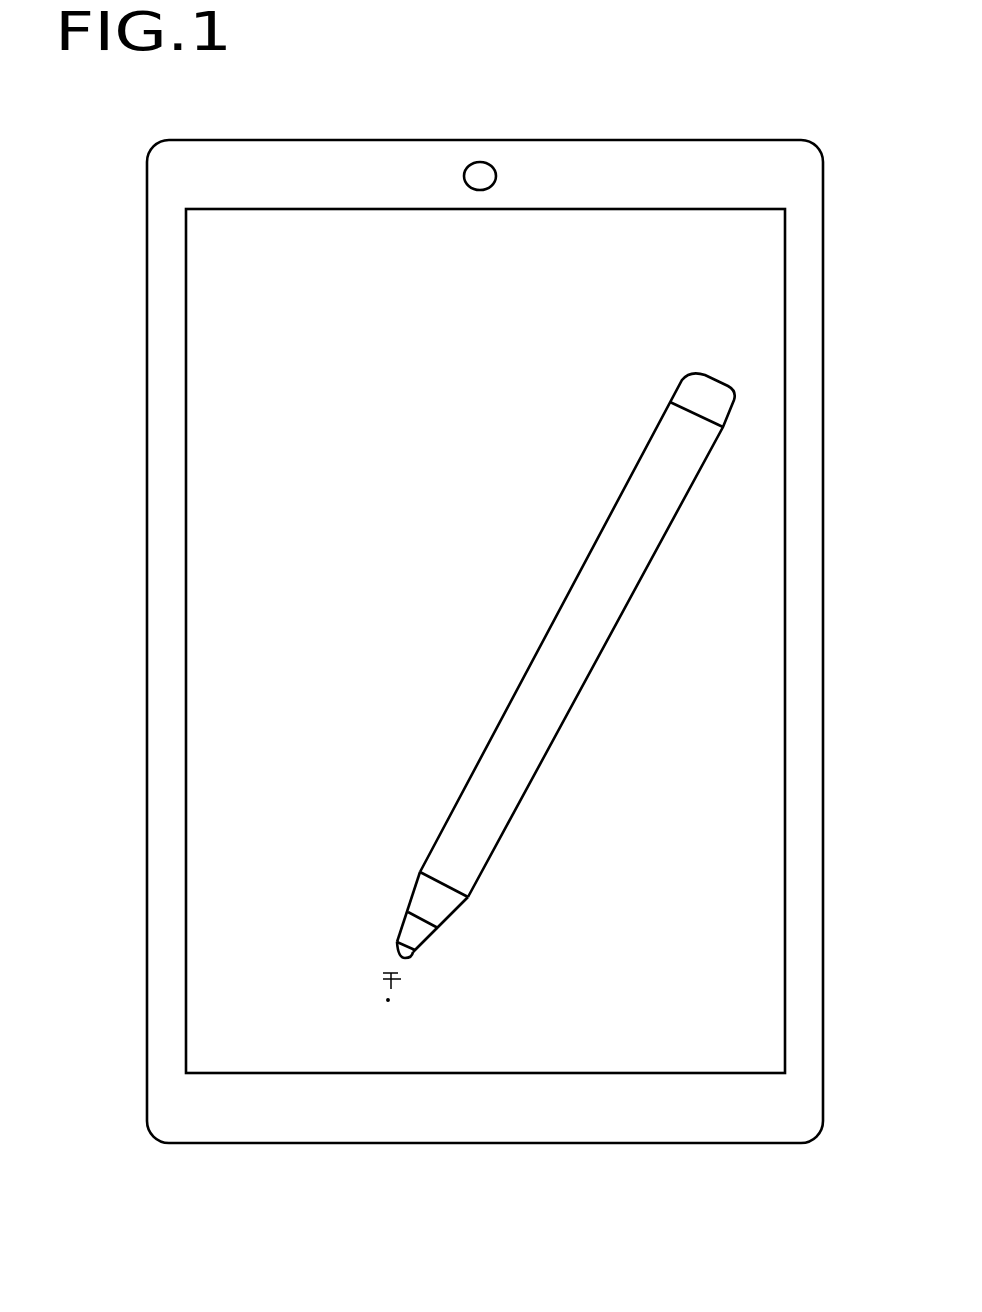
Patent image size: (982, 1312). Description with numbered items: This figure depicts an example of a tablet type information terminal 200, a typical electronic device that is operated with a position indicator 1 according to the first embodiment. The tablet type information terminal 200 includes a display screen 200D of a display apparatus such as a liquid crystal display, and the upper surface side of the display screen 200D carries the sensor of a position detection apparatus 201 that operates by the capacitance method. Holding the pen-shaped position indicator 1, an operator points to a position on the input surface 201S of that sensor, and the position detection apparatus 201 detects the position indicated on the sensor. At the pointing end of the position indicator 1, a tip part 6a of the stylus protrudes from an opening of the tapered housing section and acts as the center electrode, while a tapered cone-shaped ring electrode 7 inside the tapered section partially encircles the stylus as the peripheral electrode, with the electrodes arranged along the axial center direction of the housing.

The tablet type information terminal 200 is at (427, 140).
The display screen 200D is at (218, 420).
The position detection apparatus 201 is at (573, 1037).
The input surface 201S is at (313, 1047).
The position indicator 1 is at (597, 540).
The ring electrode 7 is at (408, 930).
The tip part of the stylus 6a is at (400, 955).